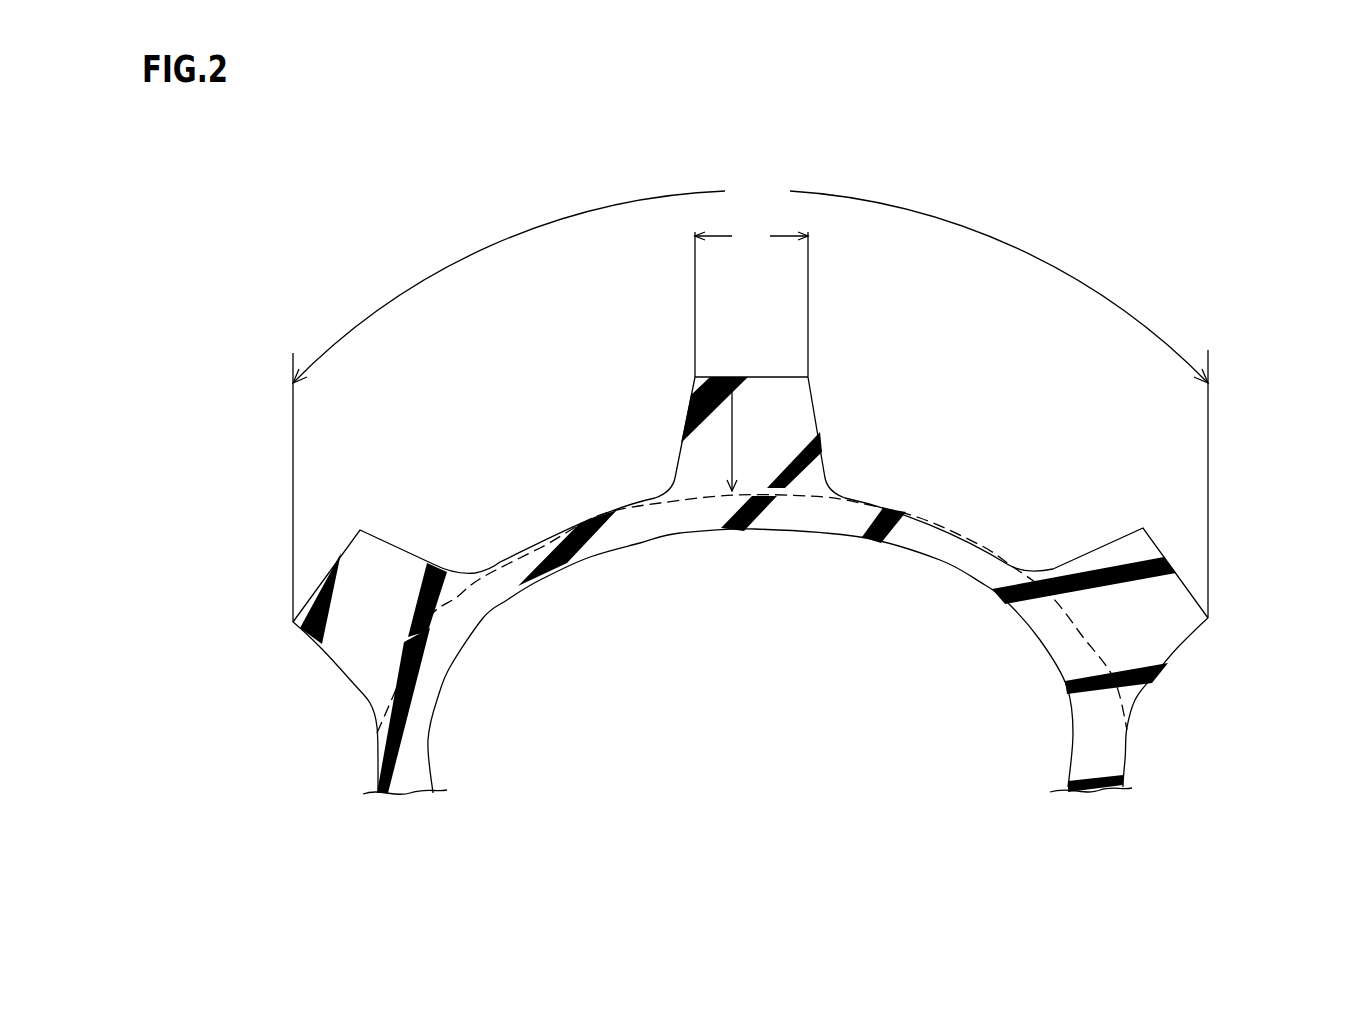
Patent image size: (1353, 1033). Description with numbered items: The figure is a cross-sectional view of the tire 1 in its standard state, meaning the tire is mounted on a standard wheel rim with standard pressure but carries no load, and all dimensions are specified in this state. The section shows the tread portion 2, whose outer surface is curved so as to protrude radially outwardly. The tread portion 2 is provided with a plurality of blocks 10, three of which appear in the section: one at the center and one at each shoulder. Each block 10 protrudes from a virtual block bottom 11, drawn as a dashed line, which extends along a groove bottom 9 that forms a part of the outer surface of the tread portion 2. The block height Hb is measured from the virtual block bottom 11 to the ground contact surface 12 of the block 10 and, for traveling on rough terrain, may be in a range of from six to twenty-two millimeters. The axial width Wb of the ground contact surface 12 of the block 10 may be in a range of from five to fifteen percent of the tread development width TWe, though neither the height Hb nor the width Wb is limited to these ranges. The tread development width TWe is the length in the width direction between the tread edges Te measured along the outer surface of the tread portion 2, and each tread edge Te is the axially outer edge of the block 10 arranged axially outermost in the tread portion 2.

The tire 1 is at (872, 473).
The tread portion 2 is at (822, 388).
The groove bottom 9 is at (537, 537).
The block 10 is at (368, 553).
The virtual block bottom 11 is at (458, 598).
The ground contact surface 12 is at (773, 375).
The tread edge Te is at (293, 622).
The tread development width TWe is at (750, 280).
The axial width of the ground contact surface Wb is at (751, 299).
The block height Hb is at (732, 447).